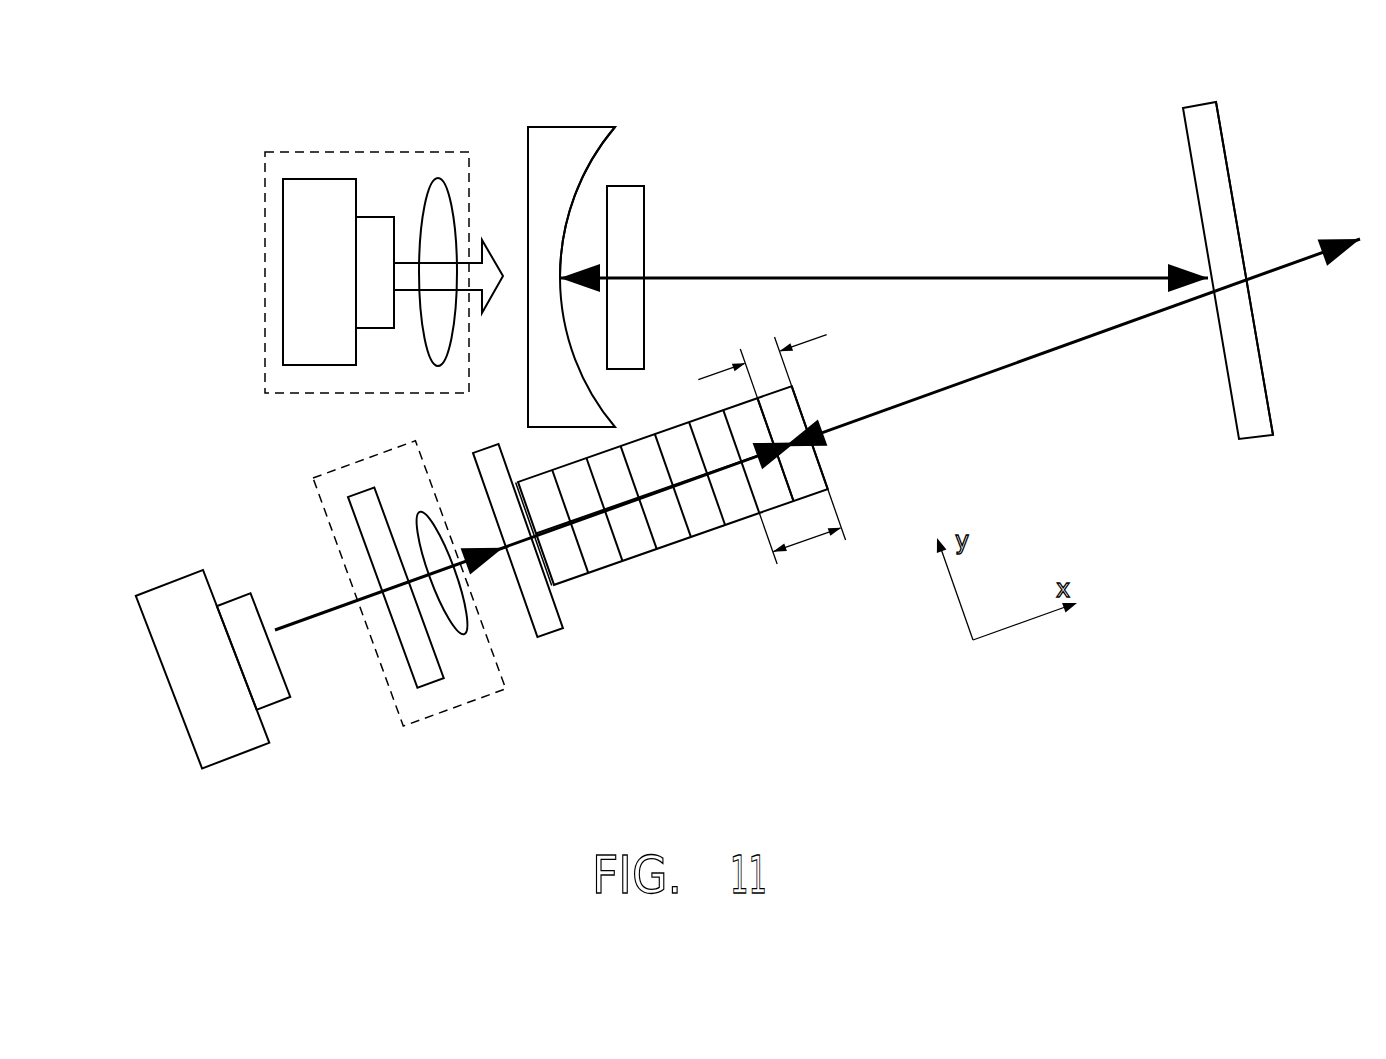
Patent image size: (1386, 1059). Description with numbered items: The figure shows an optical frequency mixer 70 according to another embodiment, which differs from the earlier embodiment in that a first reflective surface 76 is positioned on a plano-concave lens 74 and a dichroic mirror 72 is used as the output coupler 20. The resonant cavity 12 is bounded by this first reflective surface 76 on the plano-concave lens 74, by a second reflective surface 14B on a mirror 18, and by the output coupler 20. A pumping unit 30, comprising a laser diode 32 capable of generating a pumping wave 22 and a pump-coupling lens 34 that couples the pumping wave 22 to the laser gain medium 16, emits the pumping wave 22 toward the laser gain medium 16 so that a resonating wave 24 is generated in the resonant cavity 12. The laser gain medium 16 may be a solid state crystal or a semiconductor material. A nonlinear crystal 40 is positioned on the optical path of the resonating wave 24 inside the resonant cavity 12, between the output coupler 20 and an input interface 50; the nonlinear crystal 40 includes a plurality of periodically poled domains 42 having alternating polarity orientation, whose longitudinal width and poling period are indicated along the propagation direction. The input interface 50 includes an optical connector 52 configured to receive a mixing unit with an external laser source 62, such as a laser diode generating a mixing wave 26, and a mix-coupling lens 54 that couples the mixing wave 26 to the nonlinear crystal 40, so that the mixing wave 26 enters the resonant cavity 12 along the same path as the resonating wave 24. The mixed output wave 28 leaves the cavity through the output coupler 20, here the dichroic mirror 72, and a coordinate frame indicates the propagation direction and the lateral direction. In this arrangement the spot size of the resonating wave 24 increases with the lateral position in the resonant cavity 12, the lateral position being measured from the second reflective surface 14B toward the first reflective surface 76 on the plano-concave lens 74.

The resonant cavity 12 is at (785, 202).
The second reflective surface 14B is at (563, 613).
The laser gain medium 16 is at (644, 222).
The mirror 18 is at (552, 638).
The output coupler 20 is at (1248, 112).
The pumping wave 22 is at (493, 297).
The resonating wave 24 is at (1007, 277).
The mixing wave 26 is at (480, 533).
The output light 28 is at (1292, 262).
The pumping unit 30 is at (378, 152).
The laser diode 32 is at (320, 179).
The pump-coupling lens 34 is at (438, 180).
The nonlinear crystal 40 is at (707, 533).
The periodically poled domains 42 is at (812, 473).
The input interface 50 is at (453, 707).
The optical connector 52 is at (355, 492).
The mix-coupling lens 54 is at (418, 510).
The external laser source 62 is at (167, 587).
The optical frequency mixer 70 is at (1018, 98).
The dichroic mirror 72 is at (1265, 373).
The plano-concave lens 74 is at (575, 127).
The first reflective surface 76 is at (592, 147).